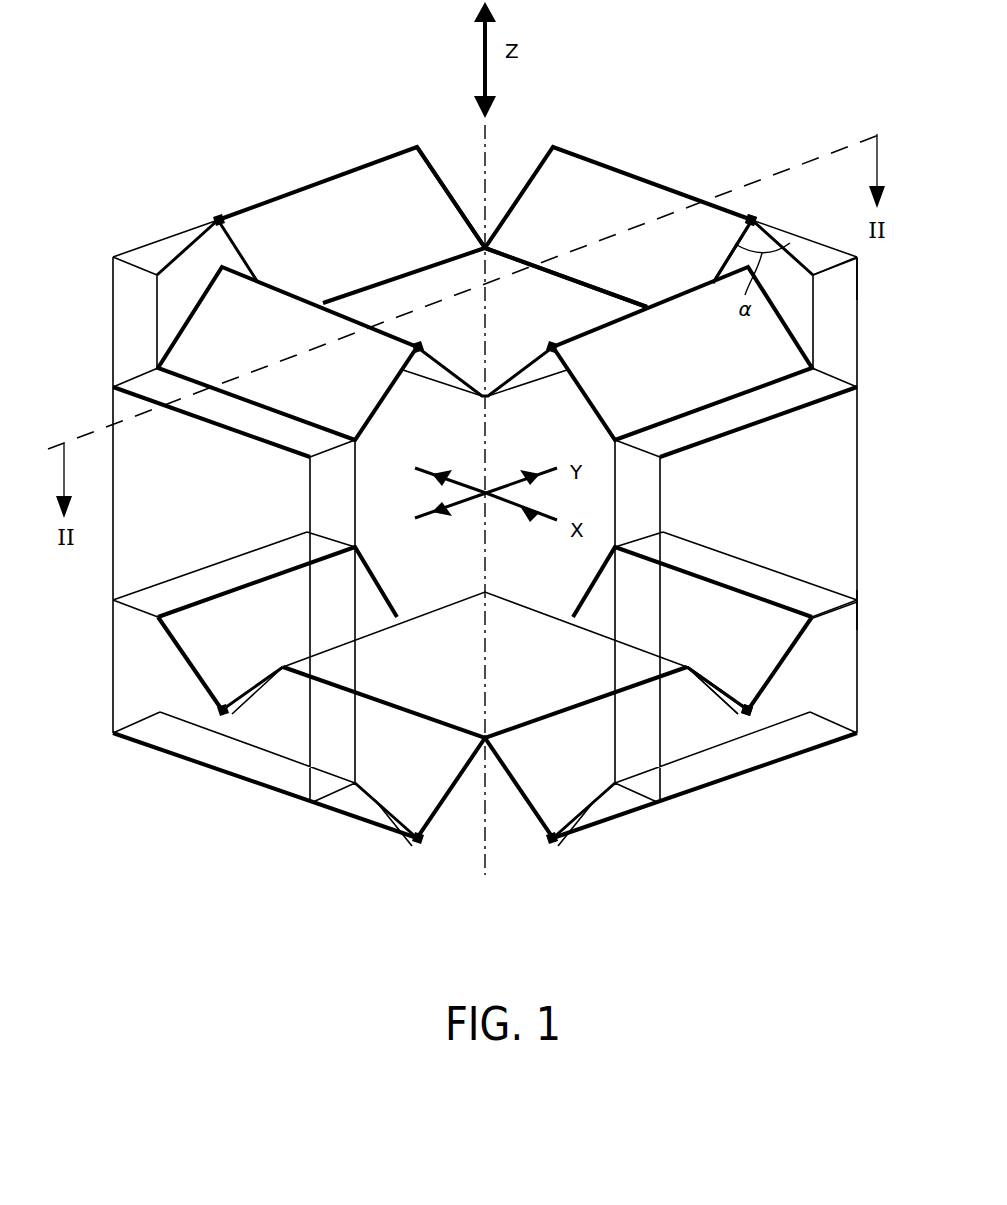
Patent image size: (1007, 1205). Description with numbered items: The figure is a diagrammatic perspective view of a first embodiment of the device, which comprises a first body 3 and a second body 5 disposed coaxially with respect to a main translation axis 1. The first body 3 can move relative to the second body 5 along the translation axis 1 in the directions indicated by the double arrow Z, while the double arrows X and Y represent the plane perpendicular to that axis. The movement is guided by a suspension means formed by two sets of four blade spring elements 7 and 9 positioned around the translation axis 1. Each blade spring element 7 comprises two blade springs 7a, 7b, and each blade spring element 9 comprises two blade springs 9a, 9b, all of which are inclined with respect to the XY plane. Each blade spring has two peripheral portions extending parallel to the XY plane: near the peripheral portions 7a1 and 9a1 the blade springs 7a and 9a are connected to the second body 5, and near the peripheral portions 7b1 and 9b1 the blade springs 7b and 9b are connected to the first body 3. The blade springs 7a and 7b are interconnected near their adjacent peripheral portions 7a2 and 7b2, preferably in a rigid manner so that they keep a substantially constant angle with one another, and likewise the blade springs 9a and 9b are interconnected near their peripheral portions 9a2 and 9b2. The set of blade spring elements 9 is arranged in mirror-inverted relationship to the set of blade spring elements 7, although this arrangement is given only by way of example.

The translation axis 1 is at (488, 428).
The first body 3 is at (527, 607).
The second body 5 is at (840, 490).
The blade spring elements 7 is at (273, 176).
The blade spring 7a is at (182, 253).
The peripheral portion 7a1 is at (857, 272).
The peripheral portion 7a2 is at (758, 225).
The blade spring 7b is at (438, 175).
The peripheral portion 7b1 is at (583, 281).
The peripheral portion 7b2 is at (745, 232).
The blade spring elements 9 is at (174, 677).
The blade spring 9a is at (174, 641).
The peripheral portion 9a1 is at (857, 604).
The peripheral portion 9a2 is at (753, 722).
The blade spring 9b is at (260, 685).
The peripheral portion 9b1 is at (690, 662).
The peripheral portion 9b2 is at (727, 705).